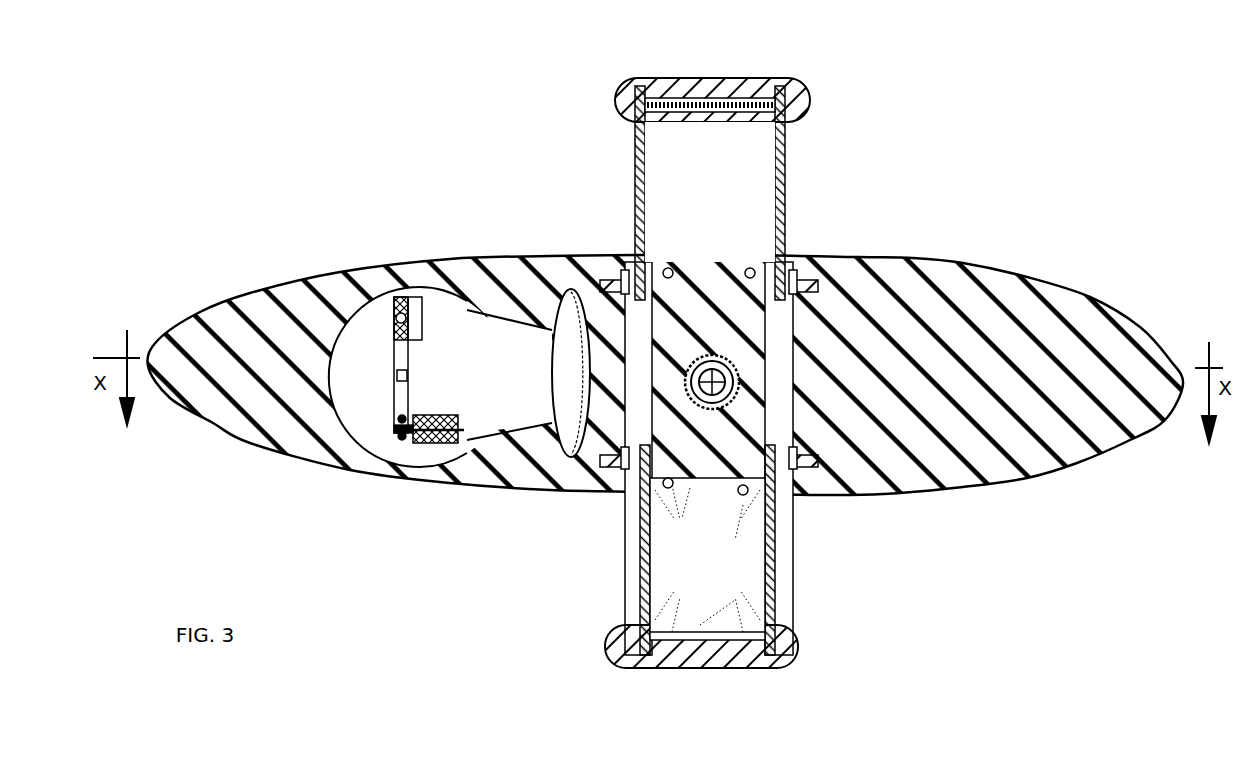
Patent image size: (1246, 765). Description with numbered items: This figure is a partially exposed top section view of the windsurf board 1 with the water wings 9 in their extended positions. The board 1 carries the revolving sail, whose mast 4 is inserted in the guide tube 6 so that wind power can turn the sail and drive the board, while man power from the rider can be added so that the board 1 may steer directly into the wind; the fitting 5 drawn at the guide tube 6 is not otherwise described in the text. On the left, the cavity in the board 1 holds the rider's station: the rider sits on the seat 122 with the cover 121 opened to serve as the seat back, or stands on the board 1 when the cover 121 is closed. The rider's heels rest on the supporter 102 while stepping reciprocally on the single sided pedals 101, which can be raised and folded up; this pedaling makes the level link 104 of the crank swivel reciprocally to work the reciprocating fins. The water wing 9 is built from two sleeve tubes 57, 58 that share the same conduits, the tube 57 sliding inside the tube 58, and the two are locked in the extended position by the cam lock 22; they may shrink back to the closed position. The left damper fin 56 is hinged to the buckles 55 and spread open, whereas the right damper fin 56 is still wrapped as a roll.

The board 1 is at (295, 298).
The mast 4 is at (950, 258).
The fastening bolt 5 is at (733, 366).
The guide tube 6 is at (712, 355).
The water wings 9 is at (630, 82).
The cam lock 22 is at (612, 282).
The buckles 55 is at (743, 490).
The damper fin 56 is at (742, 90).
The sleeve tube 57 is at (786, 172).
The sleeve tube 58 is at (628, 577).
The single sided pedals 101 is at (401, 297).
The supporter 102 is at (415, 305).
The level link 104 is at (400, 395).
The seat cover 121 is at (565, 318).
The seat 122 is at (512, 397).